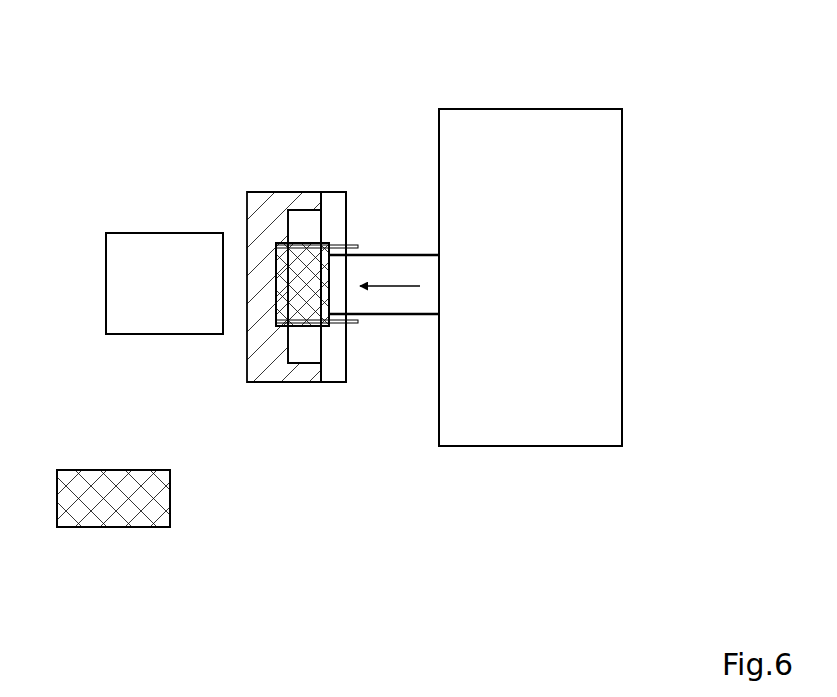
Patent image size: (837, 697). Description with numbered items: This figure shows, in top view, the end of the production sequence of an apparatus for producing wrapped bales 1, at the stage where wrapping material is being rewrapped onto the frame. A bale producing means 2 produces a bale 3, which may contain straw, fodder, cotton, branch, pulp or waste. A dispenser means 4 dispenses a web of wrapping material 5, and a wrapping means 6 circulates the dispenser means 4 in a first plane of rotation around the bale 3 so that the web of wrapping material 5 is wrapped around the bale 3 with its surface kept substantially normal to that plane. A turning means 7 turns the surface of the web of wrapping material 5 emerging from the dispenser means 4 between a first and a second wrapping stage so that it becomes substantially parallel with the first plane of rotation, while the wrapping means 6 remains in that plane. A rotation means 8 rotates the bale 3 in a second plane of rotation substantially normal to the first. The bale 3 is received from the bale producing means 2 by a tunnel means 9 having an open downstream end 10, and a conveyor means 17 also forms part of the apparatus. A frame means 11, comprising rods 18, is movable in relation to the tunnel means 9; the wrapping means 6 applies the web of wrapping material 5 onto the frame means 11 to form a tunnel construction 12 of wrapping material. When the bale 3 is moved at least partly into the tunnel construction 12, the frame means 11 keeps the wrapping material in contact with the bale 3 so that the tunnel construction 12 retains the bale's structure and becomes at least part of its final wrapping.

The wrapped bale 1 is at (98, 527).
The bale producing means 2 is at (519, 109).
The bale 3 is at (428, 263).
The dispenser means 4 is at (260, 170).
The web of wrapping material 5 is at (247, 218).
The wrapping means 6 is at (289, 177).
The turning means 7 is at (324, 190).
The rotation means 8 is at (99, 287).
The tunnel means 9 is at (376, 322).
The open downstream end 10 is at (297, 302).
The frame means 11 is at (357, 334).
The tunnel construction 12 is at (292, 330).
The conveyor means 17 is at (167, 233).
The rods 18 is at (333, 324).